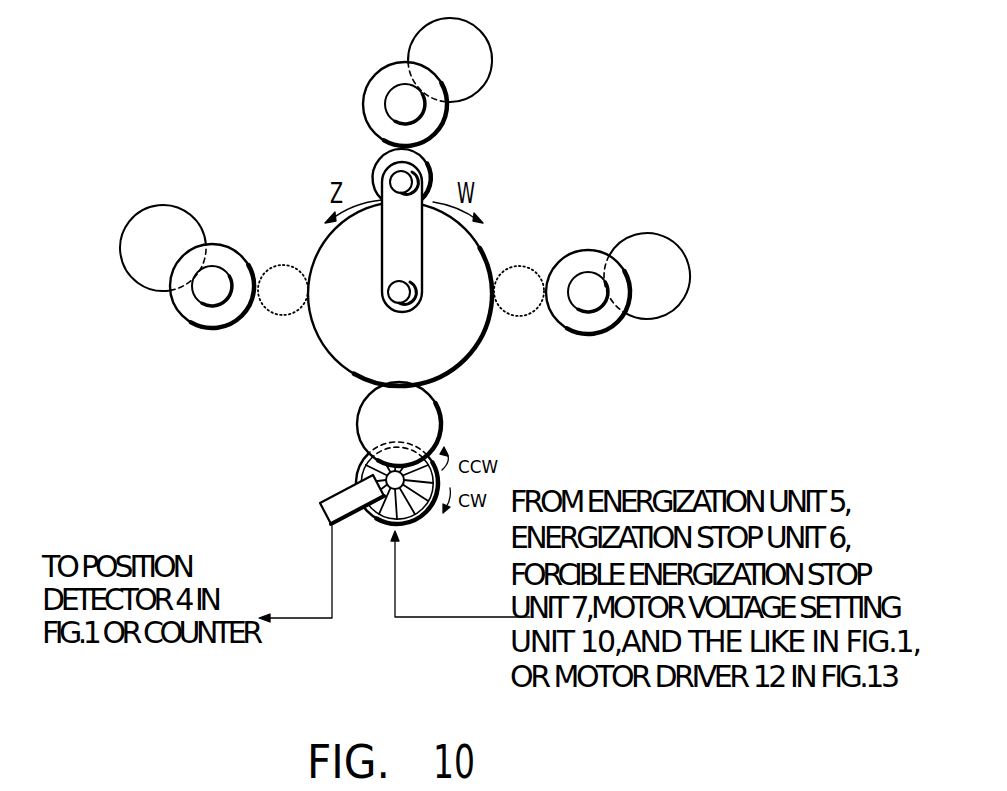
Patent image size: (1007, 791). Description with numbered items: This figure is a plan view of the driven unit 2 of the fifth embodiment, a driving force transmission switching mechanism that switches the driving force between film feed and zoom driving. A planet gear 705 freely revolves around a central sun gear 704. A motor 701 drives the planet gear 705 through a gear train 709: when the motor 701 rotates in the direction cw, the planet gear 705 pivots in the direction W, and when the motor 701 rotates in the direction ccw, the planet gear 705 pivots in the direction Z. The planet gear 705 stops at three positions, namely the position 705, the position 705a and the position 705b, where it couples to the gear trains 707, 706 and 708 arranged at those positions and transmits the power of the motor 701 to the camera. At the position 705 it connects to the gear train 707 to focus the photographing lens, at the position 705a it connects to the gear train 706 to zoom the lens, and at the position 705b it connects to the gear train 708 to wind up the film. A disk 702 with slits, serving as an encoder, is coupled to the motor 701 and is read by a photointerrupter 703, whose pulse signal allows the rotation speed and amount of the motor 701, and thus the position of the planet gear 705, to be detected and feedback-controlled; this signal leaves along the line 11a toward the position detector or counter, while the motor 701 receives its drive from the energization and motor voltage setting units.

The driven unit 2 is at (146, 406).
The signal line to position detector 11a is at (295, 589).
The motor 701 is at (358, 470).
The disk 702 is at (421, 506).
The photointerrupter 703 is at (321, 514).
The sun gear 704 is at (319, 255).
The planet gear 705 is at (430, 169).
The position 705a is at (274, 314).
The position 705b is at (517, 315).
The gear train 706 is at (200, 345).
The gear train 707 is at (433, 4).
The gear train 708 is at (687, 316).
The gear train 709 is at (357, 417).